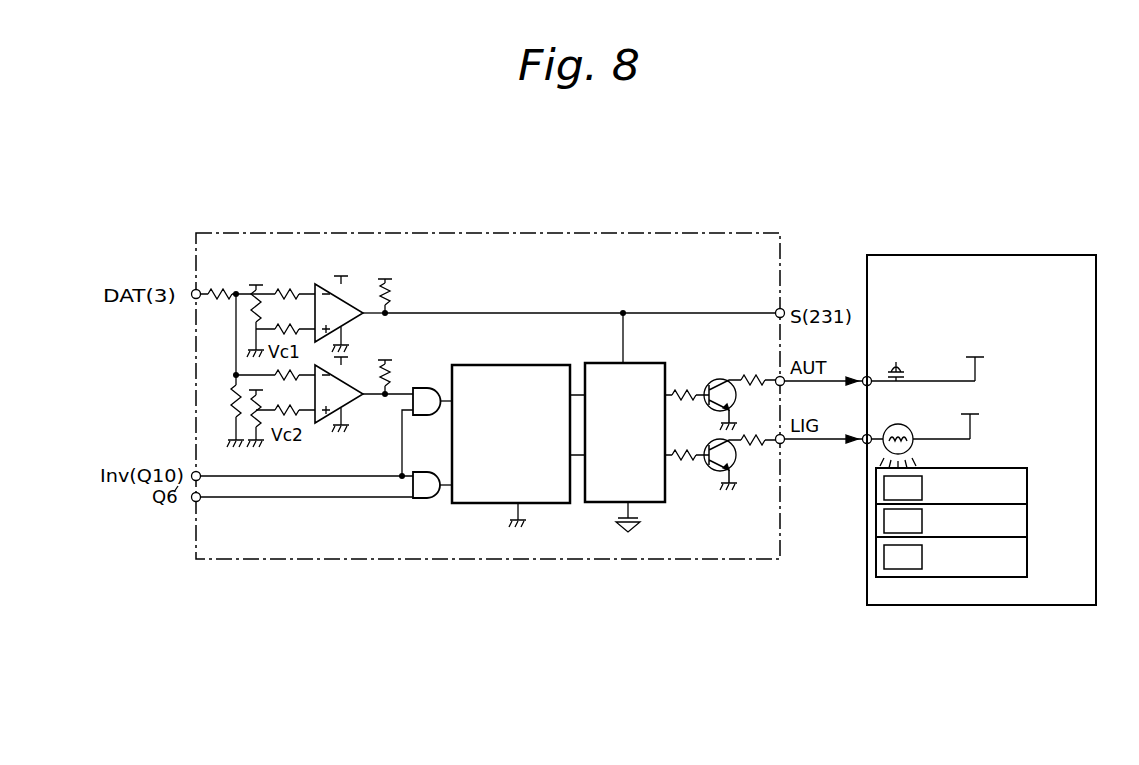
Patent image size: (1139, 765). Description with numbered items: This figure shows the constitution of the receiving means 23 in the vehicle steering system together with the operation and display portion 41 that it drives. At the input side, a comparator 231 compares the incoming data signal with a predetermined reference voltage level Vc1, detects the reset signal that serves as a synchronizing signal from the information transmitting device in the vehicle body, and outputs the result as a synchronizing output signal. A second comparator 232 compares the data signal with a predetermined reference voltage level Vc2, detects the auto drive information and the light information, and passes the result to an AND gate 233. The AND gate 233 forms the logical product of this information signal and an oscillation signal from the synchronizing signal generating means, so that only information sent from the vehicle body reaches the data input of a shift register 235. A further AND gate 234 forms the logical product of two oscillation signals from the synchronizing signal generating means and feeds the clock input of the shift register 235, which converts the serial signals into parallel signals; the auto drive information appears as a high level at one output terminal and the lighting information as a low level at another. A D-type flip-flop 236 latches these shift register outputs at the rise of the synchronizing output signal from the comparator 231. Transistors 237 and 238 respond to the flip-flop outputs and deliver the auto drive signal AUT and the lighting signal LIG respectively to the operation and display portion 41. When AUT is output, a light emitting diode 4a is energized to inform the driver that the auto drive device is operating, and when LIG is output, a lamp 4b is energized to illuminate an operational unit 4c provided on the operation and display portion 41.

The receiving means 23 is at (310, 232).
The comparator 231 is at (352, 302).
The comparator 232 is at (347, 418).
The AND gate 233 is at (420, 388).
The AND gate 234 is at (420, 498).
The shift register 235 is at (515, 365).
The D-type flip-flop 236 is at (636, 363).
The transistor 237 is at (716, 380).
The transistor 238 is at (712, 472).
The operation and display portion 41 is at (910, 254).
The light emitting diode 4a is at (898, 358).
The lamp 4b is at (912, 430).
The operational unit 4c is at (1020, 468).